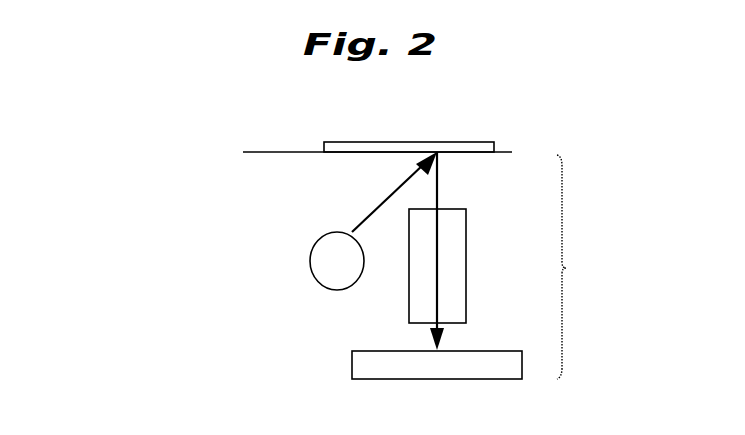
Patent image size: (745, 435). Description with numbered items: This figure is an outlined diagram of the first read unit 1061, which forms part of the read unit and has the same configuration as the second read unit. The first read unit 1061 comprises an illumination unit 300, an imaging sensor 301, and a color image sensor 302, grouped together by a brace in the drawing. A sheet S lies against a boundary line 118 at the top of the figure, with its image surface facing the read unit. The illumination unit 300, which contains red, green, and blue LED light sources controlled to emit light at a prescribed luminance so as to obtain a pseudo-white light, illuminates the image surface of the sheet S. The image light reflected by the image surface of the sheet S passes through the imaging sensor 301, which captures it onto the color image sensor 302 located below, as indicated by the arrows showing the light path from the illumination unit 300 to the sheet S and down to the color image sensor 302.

The casing / boundary line 118 is at (263, 153).
The sheet S is at (466, 138).
The illumination unit 300 is at (309, 268).
The imaging sensor 301 is at (416, 299).
The color image sensor 302 is at (368, 366).
The first read unit 1061 is at (627, 267).